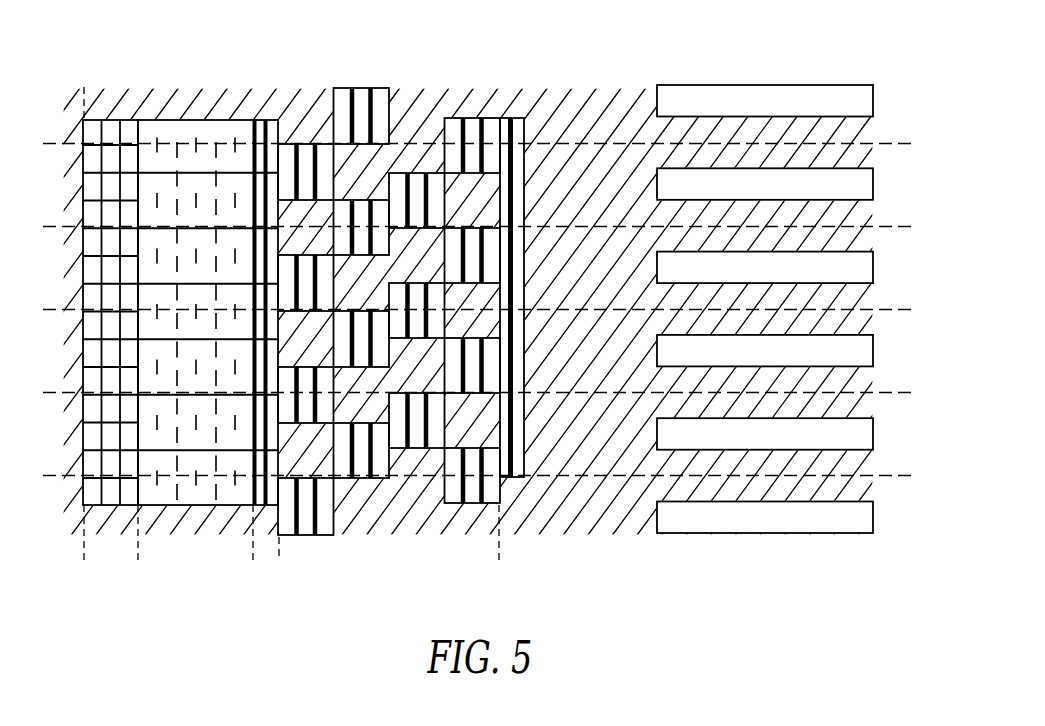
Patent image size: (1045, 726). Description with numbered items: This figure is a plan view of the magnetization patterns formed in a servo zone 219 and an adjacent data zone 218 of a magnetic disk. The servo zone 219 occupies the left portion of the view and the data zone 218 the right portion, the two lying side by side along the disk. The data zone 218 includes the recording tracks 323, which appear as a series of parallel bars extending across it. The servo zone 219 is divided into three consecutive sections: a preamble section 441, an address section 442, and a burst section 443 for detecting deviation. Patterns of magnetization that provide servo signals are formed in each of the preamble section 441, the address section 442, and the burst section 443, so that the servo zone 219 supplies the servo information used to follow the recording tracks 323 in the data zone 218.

The servo zone 219 is at (83, 58).
The data zone 218 is at (655, 53).
The recording tracks 323 is at (768, 85).
The preamble section 441 is at (83, 567).
The address section 442 is at (278, 567).
The burst section 443 is at (279, 567).